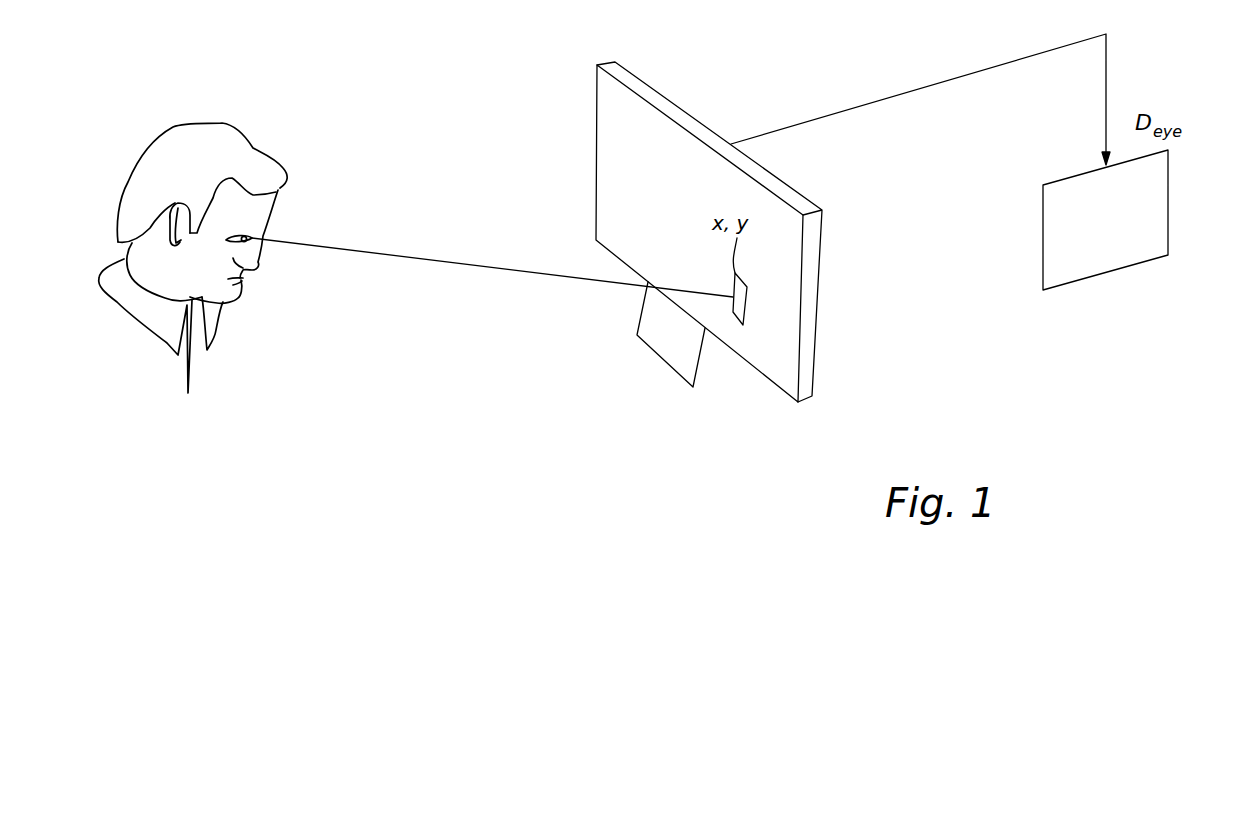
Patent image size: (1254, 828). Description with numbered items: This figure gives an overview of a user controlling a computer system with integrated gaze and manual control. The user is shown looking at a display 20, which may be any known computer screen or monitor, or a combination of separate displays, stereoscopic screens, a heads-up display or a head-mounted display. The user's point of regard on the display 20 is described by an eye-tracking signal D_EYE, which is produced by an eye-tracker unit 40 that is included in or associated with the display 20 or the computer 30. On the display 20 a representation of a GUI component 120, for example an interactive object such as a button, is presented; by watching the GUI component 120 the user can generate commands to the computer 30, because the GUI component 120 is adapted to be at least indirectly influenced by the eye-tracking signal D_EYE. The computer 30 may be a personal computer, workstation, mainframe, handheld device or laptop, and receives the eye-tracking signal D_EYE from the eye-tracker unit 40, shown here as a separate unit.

The display 20 is at (705, 138).
The computer 30 is at (1155, 220).
The eye-tracker unit 40 is at (685, 377).
The GUI component 120 is at (747, 305).